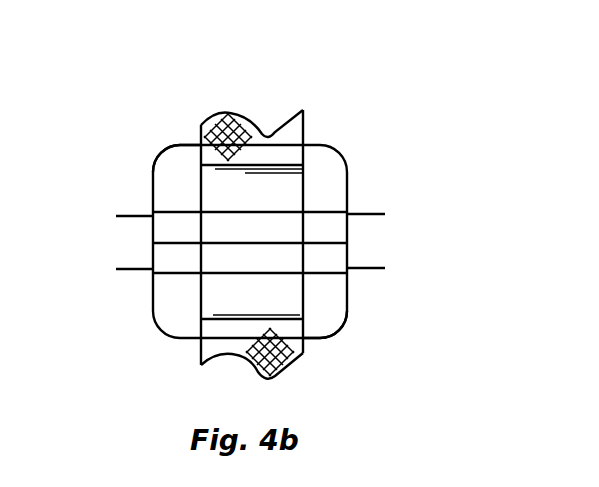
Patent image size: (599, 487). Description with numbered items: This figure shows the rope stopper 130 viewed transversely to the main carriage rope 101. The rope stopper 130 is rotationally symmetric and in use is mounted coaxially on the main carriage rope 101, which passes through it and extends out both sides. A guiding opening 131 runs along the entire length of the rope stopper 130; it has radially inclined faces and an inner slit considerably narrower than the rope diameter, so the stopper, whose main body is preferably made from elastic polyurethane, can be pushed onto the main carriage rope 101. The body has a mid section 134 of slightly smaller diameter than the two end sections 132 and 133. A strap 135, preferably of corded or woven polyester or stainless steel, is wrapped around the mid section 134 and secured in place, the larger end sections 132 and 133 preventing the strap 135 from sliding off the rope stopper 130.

The rope stopper 130 is at (169, 58).
The main carriage rope 101 is at (140, 216).
The guiding opening 131 is at (172, 259).
The end section 132 is at (173, 145).
The end section 133 is at (335, 332).
The mid section 134 is at (265, 201).
The strap 135 is at (228, 112).